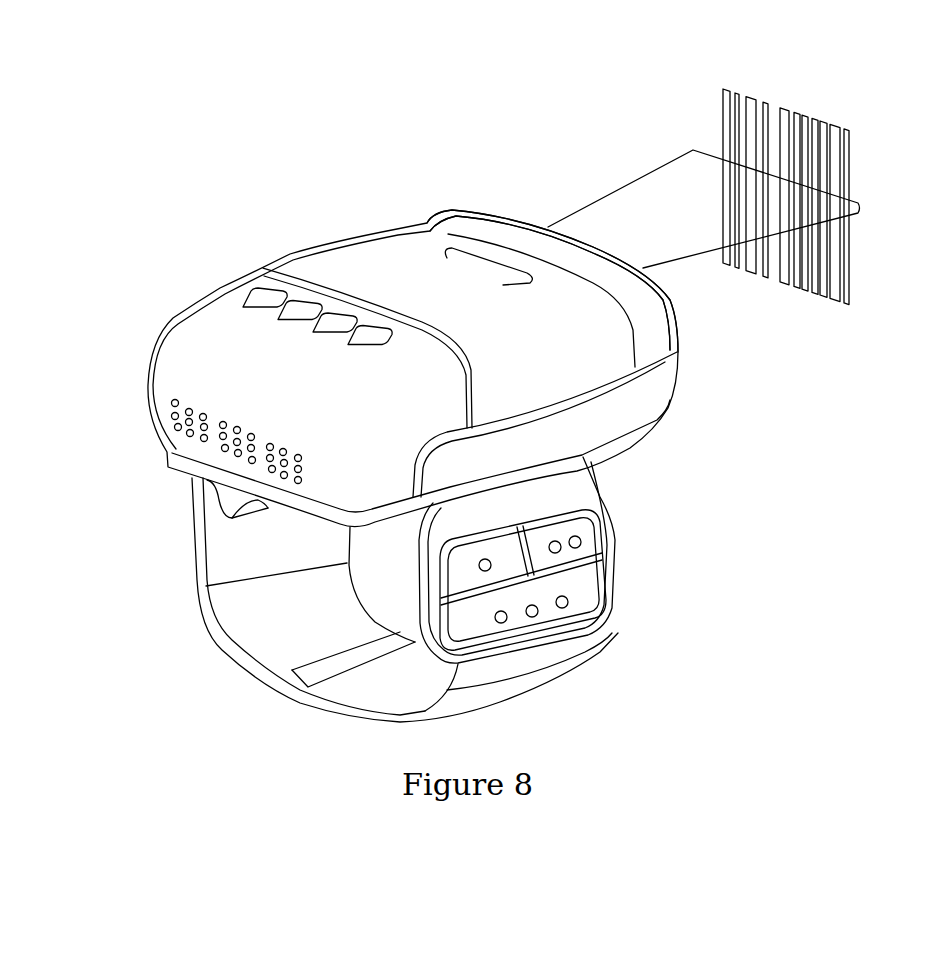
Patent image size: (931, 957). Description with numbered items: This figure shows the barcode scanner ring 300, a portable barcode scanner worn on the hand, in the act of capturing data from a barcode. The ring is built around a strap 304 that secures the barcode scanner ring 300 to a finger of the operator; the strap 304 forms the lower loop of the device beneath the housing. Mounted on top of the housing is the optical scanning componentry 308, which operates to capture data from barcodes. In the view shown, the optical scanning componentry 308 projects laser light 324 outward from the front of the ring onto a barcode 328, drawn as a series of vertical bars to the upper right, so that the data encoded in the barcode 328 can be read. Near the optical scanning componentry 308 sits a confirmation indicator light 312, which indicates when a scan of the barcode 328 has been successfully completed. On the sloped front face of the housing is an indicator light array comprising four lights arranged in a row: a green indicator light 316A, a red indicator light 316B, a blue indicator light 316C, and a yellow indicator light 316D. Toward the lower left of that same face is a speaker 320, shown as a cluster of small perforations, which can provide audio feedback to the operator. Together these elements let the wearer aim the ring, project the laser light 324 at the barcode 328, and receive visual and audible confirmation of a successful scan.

The barcode scanner ring 300 is at (107, 331).
The strap 304 is at (250, 672).
The optical scanning componentry 308 is at (521, 191).
The confirmation indicator light 312 is at (452, 257).
The green indicator light 316A is at (253, 310).
The red indicator light 316B is at (290, 328).
The blue indicator light 316C is at (333, 335).
The yellow indicator light 316D is at (388, 335).
The speaker 320 is at (185, 445).
The laser light 324 is at (698, 283).
The barcode 328 is at (778, 88).